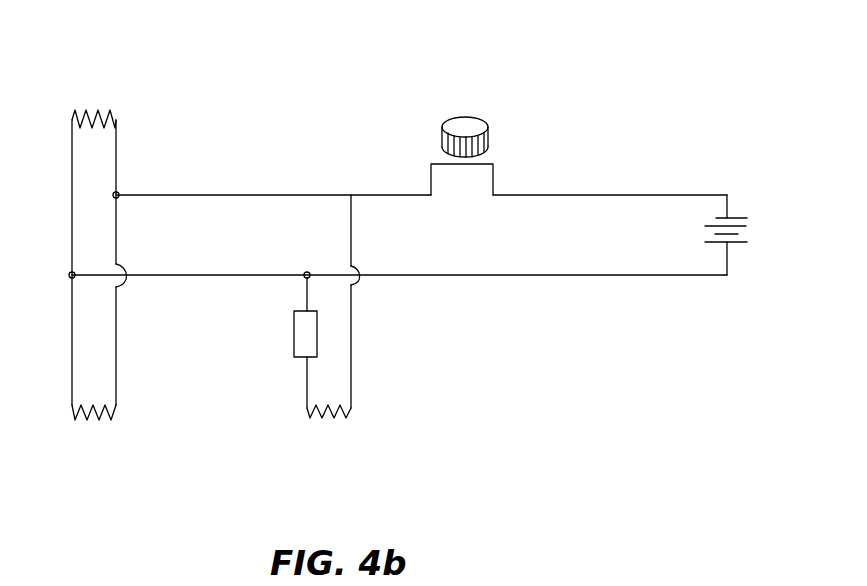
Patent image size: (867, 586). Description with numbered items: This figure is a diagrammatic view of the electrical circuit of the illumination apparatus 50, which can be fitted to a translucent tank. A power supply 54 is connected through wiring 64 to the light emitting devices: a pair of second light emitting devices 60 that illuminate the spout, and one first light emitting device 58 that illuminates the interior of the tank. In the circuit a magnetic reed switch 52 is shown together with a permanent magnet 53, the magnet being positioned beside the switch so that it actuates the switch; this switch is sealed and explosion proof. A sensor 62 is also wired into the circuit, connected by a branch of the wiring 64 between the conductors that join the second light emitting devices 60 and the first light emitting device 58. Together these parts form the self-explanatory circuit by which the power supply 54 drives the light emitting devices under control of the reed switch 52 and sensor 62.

The illumination apparatus 50 is at (586, 133).
The magnetic reed switch 52 is at (441, 162).
The permanent magnet 53 is at (481, 120).
The power supply 54 is at (733, 218).
The first light emitting device 58 is at (338, 419).
The second light emitting devices 60 is at (97, 110).
The sensor 62 is at (295, 340).
The wiring 64 is at (493, 276).